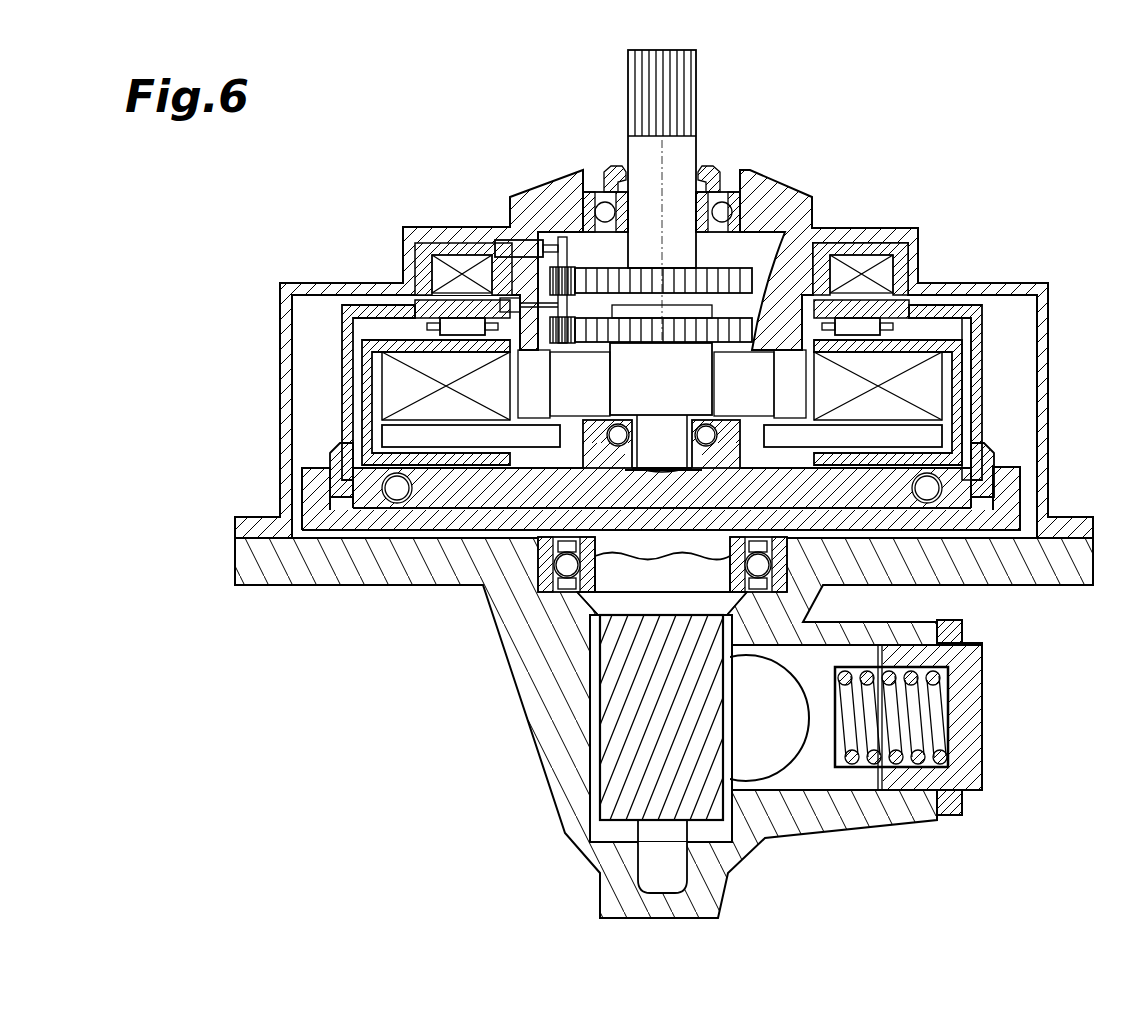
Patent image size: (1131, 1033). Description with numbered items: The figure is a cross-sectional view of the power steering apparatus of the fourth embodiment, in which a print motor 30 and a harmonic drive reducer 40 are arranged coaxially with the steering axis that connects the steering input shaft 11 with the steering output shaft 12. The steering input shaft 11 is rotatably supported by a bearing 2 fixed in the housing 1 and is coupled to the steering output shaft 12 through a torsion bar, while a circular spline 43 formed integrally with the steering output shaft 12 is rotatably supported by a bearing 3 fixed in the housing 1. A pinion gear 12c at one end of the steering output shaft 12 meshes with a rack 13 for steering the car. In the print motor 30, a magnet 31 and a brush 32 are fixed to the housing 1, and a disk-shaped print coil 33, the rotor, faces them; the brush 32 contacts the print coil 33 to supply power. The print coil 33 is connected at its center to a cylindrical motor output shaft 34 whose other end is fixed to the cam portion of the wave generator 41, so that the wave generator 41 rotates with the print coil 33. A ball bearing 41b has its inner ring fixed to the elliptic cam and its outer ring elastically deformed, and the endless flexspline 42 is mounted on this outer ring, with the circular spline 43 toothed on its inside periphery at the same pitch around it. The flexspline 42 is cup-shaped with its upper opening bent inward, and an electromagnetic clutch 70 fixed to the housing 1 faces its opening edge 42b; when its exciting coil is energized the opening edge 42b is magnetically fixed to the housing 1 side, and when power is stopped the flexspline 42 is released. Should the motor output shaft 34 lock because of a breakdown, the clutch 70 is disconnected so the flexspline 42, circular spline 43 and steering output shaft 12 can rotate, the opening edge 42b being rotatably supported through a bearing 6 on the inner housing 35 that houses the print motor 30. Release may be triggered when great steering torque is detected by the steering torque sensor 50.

The housing 1 is at (298, 283).
The bearing 2 is at (723, 210).
The bearing 3 is at (580, 600).
The bearing 6 is at (447, 318).
The steering input shaft 11 is at (628, 145).
The steering output shaft 12 is at (707, 387).
The pinion gear 12c is at (607, 762).
The rack 13 is at (763, 770).
The print motor 30 is at (378, 385).
The magnet 31 is at (975, 387).
The brush 32 is at (790, 398).
The print coil 33 is at (930, 437).
The motor output shaft 34 is at (735, 456).
The inner housing 35 is at (368, 345).
The harmonic drive reducer 40 is at (320, 450).
The wave generator 41 is at (453, 490).
The ball bearing 41b is at (396, 500).
The flexspline 42 is at (385, 300).
The opening edge 42b is at (483, 307).
The circular spline 43 is at (313, 523).
The steering torque sensor 50 is at (595, 262).
The electromagnetic clutch 70 is at (457, 257).